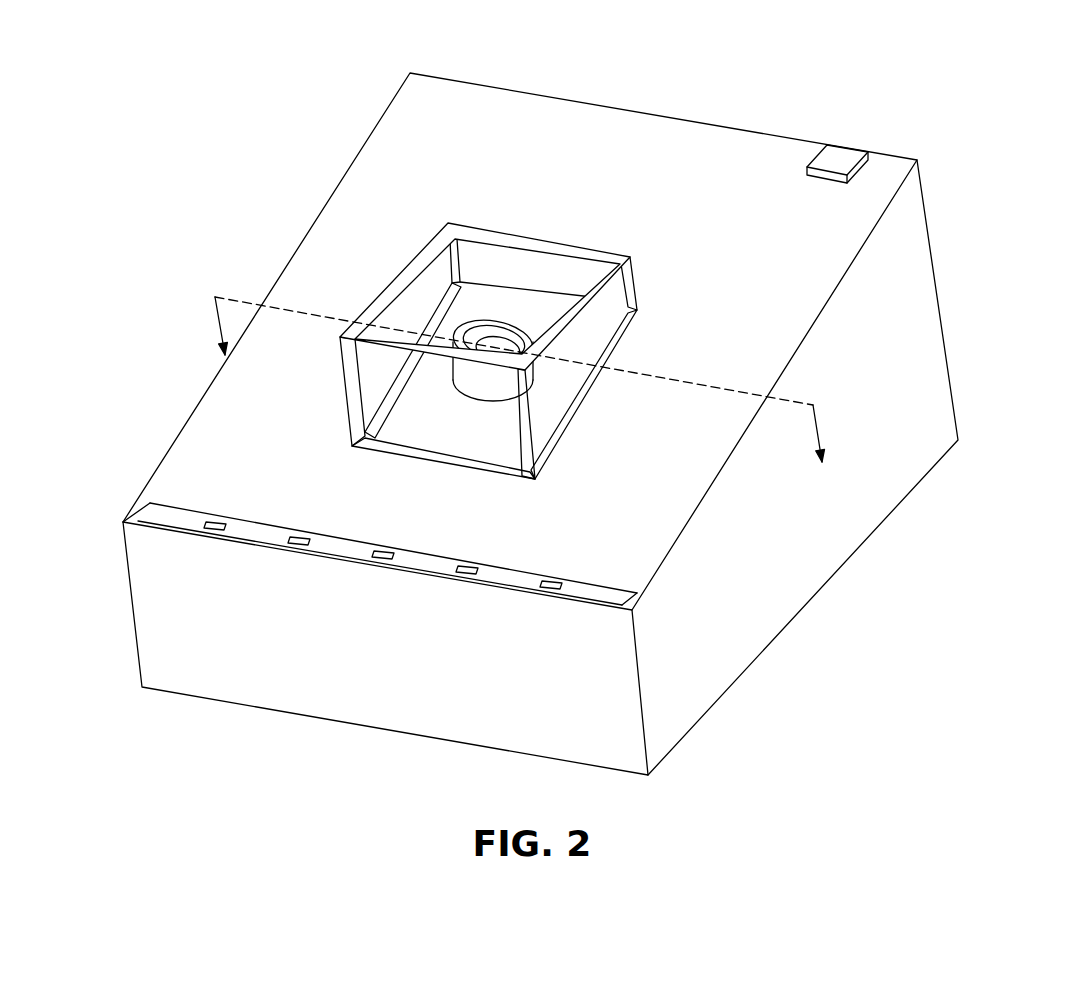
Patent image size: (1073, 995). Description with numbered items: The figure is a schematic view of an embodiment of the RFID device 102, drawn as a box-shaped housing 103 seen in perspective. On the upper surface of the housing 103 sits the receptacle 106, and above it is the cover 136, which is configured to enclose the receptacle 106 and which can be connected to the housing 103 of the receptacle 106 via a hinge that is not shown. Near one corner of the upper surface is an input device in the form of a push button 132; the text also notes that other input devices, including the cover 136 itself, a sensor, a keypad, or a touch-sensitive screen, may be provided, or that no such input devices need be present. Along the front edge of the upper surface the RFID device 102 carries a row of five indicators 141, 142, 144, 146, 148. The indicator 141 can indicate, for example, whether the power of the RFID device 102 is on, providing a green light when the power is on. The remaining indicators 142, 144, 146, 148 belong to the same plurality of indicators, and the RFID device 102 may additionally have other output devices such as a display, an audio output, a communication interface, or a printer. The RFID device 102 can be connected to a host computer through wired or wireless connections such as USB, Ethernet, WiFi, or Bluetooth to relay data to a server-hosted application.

The RFID device 102 is at (589, 410).
The housing 103 is at (917, 323).
The receptacle 106 is at (512, 325).
The push button 132 is at (838, 150).
The cover 136 is at (602, 322).
The indicator 141 is at (212, 530).
The indicator 142 is at (297, 545).
The indicator 144 is at (382, 559).
The indicator 146 is at (466, 574).
The indicator 148 is at (550, 589).